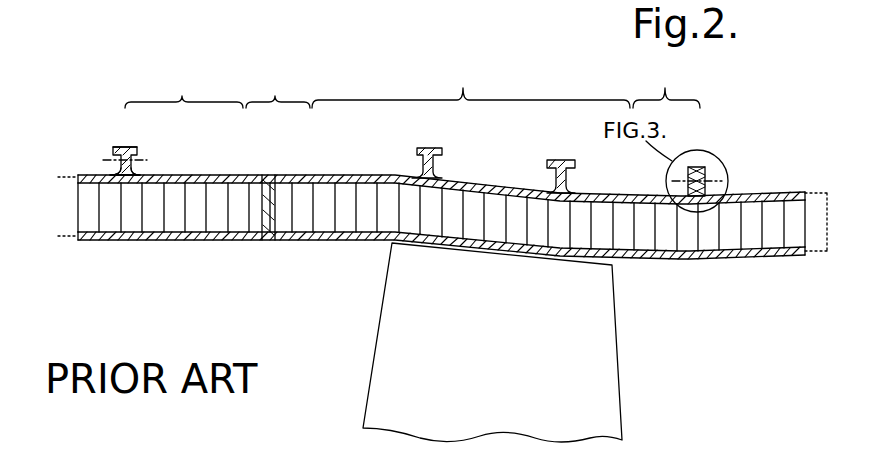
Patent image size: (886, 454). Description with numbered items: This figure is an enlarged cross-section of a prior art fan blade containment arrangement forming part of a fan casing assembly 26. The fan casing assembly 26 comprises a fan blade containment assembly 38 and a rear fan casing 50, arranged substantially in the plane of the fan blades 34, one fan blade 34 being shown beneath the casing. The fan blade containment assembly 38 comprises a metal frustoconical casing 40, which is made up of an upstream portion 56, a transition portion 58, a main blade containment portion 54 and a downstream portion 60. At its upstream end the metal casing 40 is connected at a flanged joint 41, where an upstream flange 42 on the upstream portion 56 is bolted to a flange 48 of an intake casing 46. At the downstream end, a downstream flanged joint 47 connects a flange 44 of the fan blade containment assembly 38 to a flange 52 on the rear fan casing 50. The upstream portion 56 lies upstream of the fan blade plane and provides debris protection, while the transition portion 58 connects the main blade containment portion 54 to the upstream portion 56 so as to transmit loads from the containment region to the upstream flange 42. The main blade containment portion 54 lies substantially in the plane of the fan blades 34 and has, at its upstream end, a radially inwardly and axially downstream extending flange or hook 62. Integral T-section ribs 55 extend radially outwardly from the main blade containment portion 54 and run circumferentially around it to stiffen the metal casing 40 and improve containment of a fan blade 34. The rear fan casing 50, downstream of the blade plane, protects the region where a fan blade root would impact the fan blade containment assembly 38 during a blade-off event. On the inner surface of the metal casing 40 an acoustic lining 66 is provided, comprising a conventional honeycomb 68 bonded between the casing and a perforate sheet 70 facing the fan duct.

The fan casing assembly 26 is at (390, 144).
The fan blade 34 is at (395, 338).
The fan blade containment assembly 38 is at (706, 133).
The metal frustoconical casing 40 is at (362, 176).
The flanged joint 41 is at (158, 163).
The upstream flange 42 is at (138, 150).
The flange 44 is at (706, 165).
The intake casing 46 is at (92, 176).
The downstream flanged joint 47 is at (655, 170).
The flange 48 is at (117, 149).
The rear fan casing 50 is at (790, 193).
The flange 52 is at (714, 178).
The main blade containment portion 54 is at (463, 100).
The T-section rib 55 is at (547, 162).
The upstream portion 56 is at (182, 97).
The transition portion 58 is at (275, 97).
The downstream portion 60 is at (665, 100).
The hook 62 is at (298, 238).
The acoustic lining 66 is at (172, 213).
The honeycomb 68 is at (670, 232).
The perforate sheet 70 is at (722, 252).